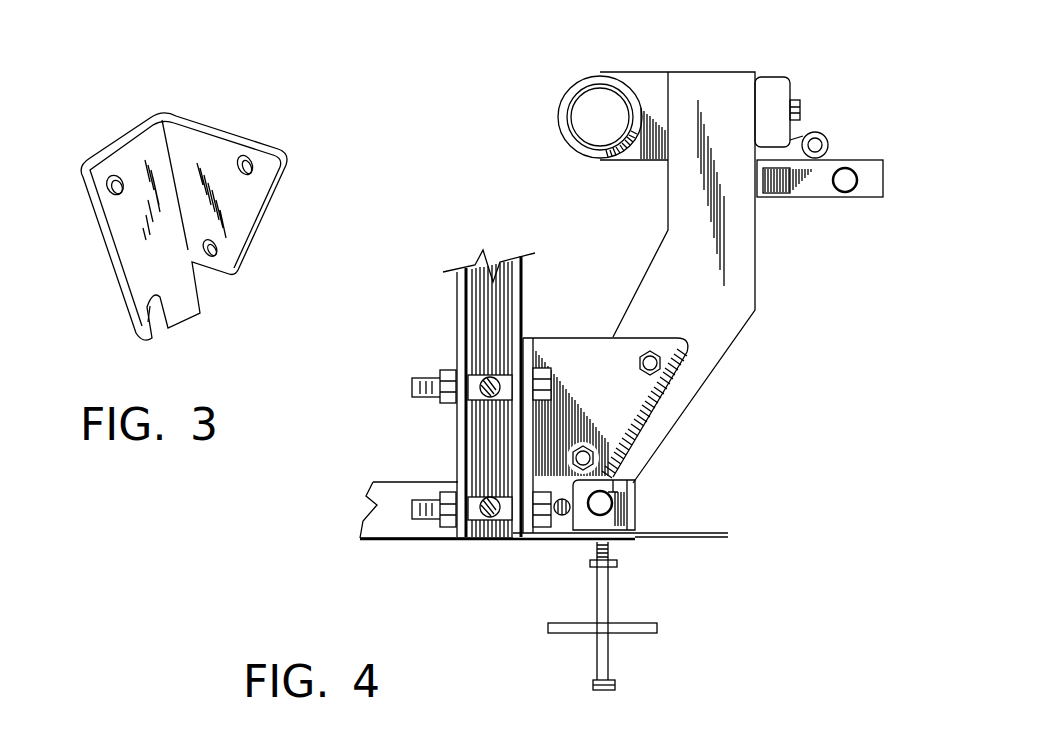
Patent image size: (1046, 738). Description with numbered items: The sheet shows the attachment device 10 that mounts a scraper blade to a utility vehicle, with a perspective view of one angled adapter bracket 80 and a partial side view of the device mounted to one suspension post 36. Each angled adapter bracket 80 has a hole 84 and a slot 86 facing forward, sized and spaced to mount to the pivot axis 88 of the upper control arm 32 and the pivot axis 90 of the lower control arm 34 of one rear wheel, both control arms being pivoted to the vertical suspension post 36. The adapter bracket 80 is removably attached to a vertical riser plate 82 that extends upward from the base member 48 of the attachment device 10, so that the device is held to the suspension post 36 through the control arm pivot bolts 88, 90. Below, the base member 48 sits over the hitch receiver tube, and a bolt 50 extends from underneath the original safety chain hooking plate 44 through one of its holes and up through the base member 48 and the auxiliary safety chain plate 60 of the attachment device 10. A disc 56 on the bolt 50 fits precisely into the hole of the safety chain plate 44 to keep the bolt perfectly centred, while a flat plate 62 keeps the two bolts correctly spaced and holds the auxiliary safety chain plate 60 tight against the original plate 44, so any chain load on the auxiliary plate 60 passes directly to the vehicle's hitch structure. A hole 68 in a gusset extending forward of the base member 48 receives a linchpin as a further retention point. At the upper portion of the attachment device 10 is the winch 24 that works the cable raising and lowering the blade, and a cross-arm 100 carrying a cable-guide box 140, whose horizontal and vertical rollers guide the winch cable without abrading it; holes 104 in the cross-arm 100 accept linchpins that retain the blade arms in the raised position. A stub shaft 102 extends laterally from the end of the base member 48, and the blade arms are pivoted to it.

In FIG. 4, the attachment device 10 is at (500, 145).
In FIG. 4, the winch 24 is at (572, 90).
In FIG. 4, the upper control arm 32 is at (482, 380).
In FIG. 4, the lower control arm 34 is at (485, 505).
In FIG. 4, the suspension post 36 is at (522, 285).
In FIG. 4, the safety chain hooking plate 44 is at (405, 482).
In FIG. 4, the base member 48 is at (613, 478).
In FIG. 4, the bolt 50 is at (610, 658).
In FIG. 4, the disc 56 is at (617, 562).
In FIG. 4, the auxiliary safety chain plate 60 is at (712, 527).
In FIG. 4, the flat plate 62 is at (567, 633).
In FIG. 4, the hole 68 is at (562, 515).
In FIG. 3, the angled adapter bracket 80 is at (230, 128).
In FIG. 4, the angled adapter bracket 80 is at (572, 337).
In FIG. 4, the vertical riser plate 82 is at (757, 287).
In FIG. 3, the hole 84 is at (105, 184).
In FIG. 3, the slot 86 is at (150, 298).
In FIG. 4, the pivot axis of the upper control arm 88 is at (412, 384).
In FIG. 4, the pivot axis of the lower control arm 90 is at (412, 511).
In FIG. 4, the cross-arm 100 is at (873, 160).
In FIG. 4, the stub shaft 102 is at (612, 497).
In FIG. 4, the hole 104 is at (845, 195).
In FIG. 4, the cable-guide box 140 is at (778, 72).